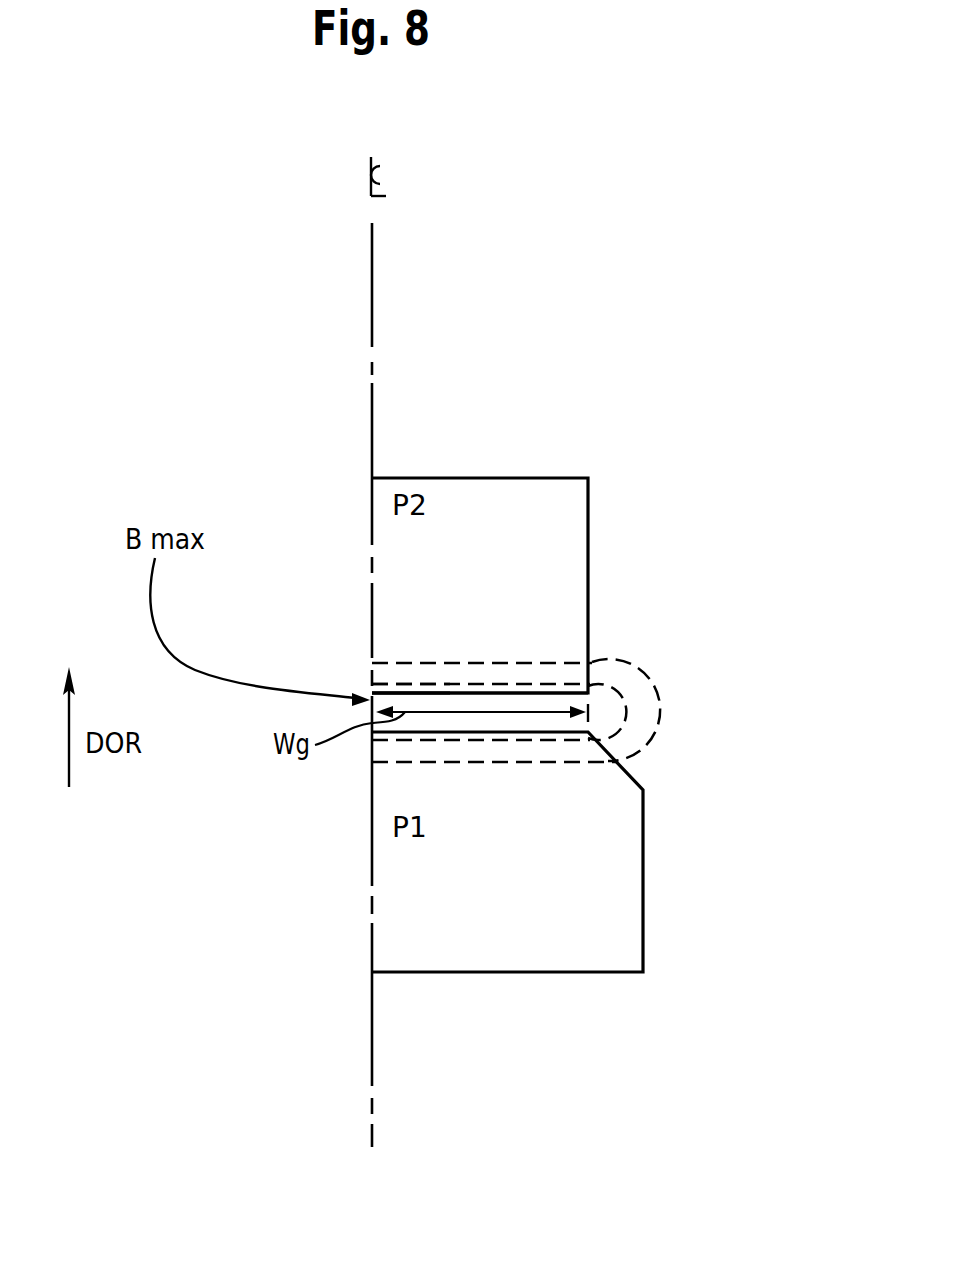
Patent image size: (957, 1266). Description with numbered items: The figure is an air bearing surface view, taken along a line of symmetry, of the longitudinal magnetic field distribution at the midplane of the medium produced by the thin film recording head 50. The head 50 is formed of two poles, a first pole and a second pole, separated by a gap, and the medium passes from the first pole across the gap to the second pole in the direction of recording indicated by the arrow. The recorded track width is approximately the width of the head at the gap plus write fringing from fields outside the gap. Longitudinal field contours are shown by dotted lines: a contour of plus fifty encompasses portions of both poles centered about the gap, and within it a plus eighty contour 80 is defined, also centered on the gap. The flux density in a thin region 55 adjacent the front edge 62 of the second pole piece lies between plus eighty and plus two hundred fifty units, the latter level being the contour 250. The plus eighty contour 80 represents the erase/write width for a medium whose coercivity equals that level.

The recording head 50 is at (714, 447).
The thin region 55 is at (372, 692).
The front edge 62 is at (432, 694).
The +80 contour 80 is at (627, 717).
The +250 contour 250 is at (335, 608).